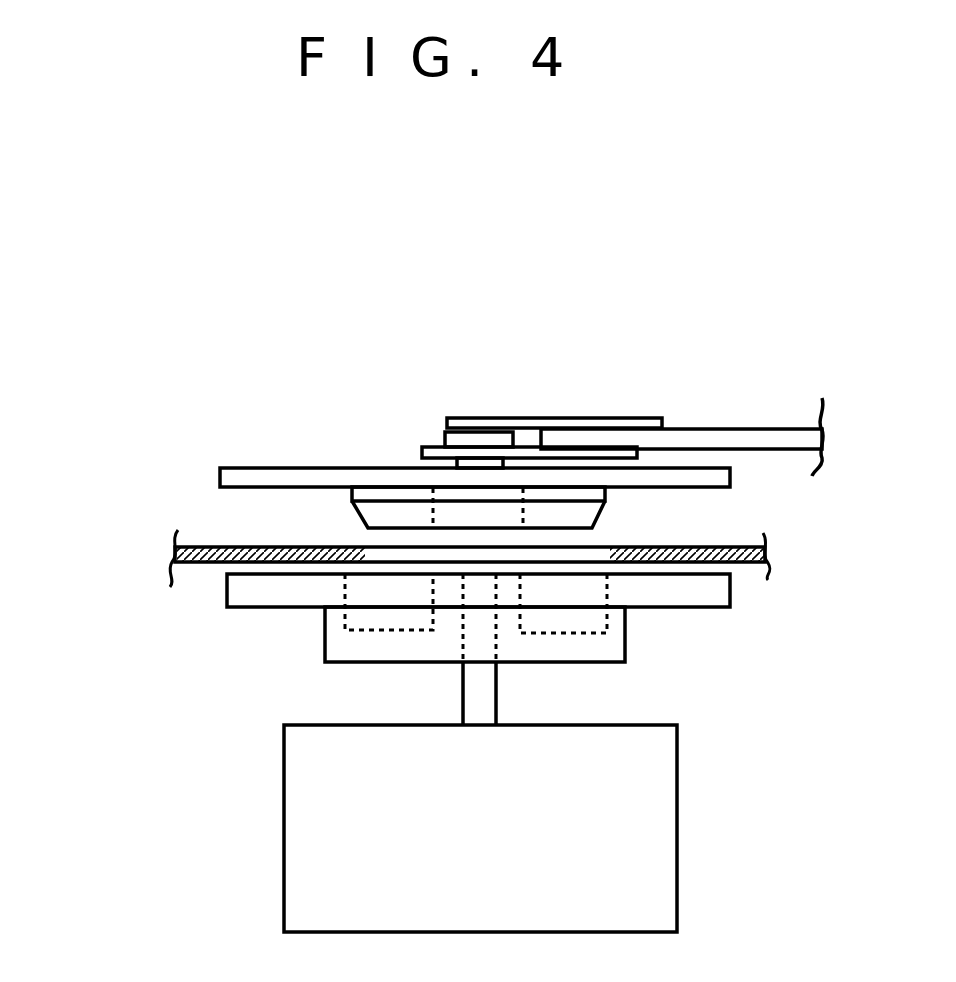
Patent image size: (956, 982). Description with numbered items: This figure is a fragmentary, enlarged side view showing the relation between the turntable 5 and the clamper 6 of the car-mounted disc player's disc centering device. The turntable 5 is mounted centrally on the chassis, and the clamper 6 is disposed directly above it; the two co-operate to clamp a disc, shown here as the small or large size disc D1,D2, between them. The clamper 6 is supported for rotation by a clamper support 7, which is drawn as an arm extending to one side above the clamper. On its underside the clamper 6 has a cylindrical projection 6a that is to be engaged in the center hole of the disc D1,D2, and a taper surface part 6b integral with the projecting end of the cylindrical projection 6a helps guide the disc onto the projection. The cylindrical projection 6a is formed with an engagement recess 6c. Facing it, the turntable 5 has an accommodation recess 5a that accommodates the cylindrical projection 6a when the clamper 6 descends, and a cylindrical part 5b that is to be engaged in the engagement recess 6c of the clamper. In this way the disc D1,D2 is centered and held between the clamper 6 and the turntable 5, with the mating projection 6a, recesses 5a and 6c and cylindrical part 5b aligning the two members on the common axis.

The turntable 5 is at (300, 640).
The accommodation recess 5a is at (593, 622).
The cylindrical part 5b is at (413, 637).
The clamper 6 is at (204, 482).
The cylindrical projection 6a is at (605, 501).
The taper surface part 6b is at (352, 505).
The engagement recess 6c is at (437, 503).
The clamper support 7 is at (778, 452).
The small size disc and large size disc D1,D2 is at (207, 563).